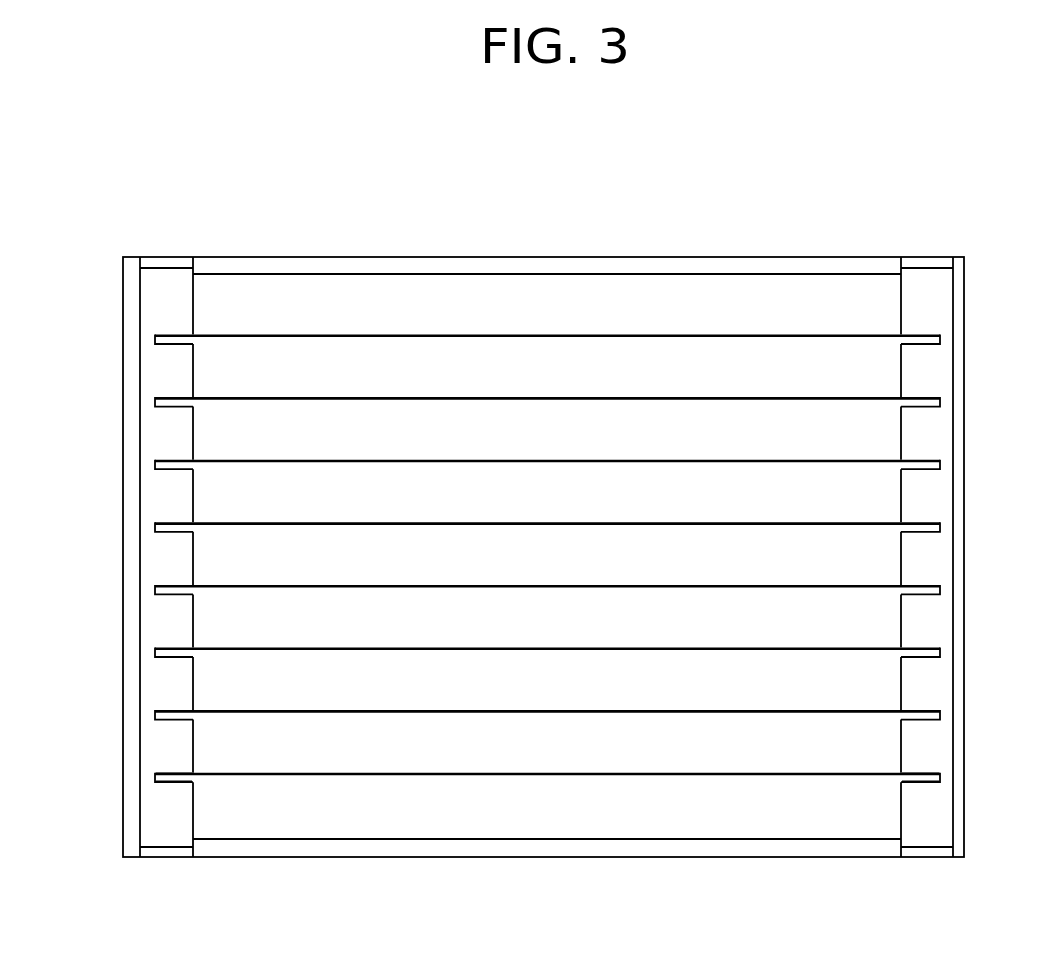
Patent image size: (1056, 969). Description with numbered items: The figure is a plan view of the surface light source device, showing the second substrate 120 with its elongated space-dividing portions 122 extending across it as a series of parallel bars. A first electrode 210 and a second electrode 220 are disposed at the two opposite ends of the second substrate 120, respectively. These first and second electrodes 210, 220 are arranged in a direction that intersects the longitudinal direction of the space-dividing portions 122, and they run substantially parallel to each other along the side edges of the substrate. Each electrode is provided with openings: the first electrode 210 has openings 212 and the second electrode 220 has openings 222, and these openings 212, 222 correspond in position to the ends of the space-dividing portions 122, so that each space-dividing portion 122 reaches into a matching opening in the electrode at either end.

The second substrate 120 is at (282, 852).
The space-dividing portions 122 is at (357, 772).
The first electrode 210 is at (169, 830).
The openings 212 is at (165, 778).
The second electrode 220 is at (931, 830).
The openings 222 is at (926, 778).